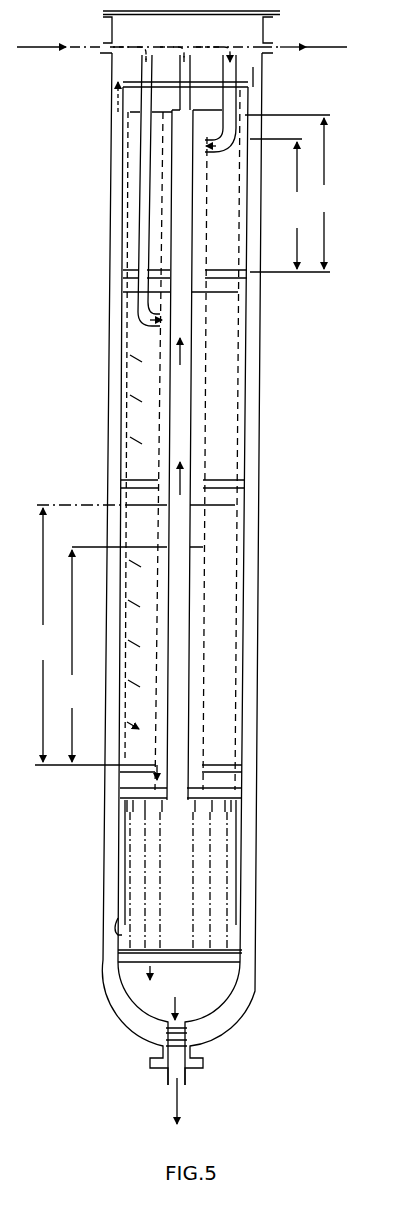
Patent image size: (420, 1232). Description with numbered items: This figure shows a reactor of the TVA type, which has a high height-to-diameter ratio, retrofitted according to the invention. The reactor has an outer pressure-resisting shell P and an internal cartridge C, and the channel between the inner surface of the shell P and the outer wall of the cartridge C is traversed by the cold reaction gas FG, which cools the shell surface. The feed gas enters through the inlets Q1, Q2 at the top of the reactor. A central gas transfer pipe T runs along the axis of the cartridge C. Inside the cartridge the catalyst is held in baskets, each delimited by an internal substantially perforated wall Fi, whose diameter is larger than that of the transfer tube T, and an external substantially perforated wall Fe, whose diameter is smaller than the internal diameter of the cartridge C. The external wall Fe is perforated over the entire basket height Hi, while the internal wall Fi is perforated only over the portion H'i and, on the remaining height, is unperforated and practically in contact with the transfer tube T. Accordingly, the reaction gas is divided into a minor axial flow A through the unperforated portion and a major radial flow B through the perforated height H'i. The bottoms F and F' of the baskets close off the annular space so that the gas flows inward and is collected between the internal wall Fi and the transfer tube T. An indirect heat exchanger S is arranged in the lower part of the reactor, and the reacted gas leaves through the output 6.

The outer pressure-resisting shell P is at (258, 528).
The internal cartridge C is at (243, 565).
The central gas transfer pipe T is at (193, 365).
The feed gas inlet tube Q1 is at (224, 85).
The feed gas inlet tube Q2 is at (143, 172).
The cold reaction gas FG is at (262, 78).
The major radial flow B is at (127, 145).
The perforated bottom F is at (221, 678).
The inner dished bottom F' is at (229, 1006).
The external substantially perforated wall Fe is at (235, 662).
The internal substantially perforated wall Fi is at (203, 685).
The minor axial flow A is at (179, 813).
The indirect heat exchanger S is at (178, 862).
The reacted gas output 6 is at (162, 1101).
The height of the catalyst basket Hi is at (181, 440).
The perforated portion of the internal wall height H'i is at (178, 450).